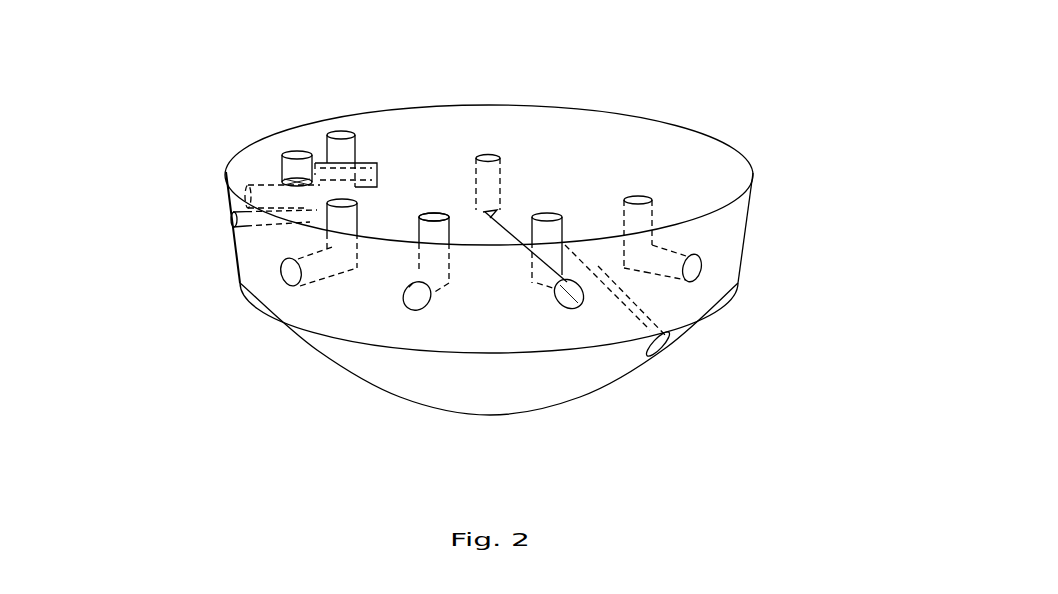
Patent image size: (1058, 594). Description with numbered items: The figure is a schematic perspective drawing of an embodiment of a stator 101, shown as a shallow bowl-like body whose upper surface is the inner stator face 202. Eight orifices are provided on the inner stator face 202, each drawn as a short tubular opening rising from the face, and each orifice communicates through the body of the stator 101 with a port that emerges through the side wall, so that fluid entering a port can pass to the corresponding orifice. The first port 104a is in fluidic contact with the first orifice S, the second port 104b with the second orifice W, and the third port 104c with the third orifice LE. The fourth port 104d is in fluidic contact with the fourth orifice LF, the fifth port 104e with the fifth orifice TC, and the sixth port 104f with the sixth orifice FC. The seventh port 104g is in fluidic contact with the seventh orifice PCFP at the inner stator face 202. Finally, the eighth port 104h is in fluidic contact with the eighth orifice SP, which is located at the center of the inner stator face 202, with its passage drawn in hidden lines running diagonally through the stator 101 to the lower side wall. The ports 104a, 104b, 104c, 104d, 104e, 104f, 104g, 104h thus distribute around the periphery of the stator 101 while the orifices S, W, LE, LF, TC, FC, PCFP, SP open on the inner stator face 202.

The stator 101 is at (724, 88).
The inner stator face 202 is at (607, 133).
The seventh port 104g is at (261, 121).
The first port 104a is at (700, 267).
The second port 104b is at (570, 300).
The third port 104c is at (417, 303).
The fourth port 104d is at (293, 275).
The fifth port 104e is at (240, 245).
The sixth port 104f is at (240, 203).
The eighth port 104h is at (673, 345).
The sixth orifice FC is at (283, 160).
The seventh orifice PCFP is at (343, 133).
The fifth orifice TC is at (300, 176).
The fourth orifice LF is at (347, 186).
The third orifice LE is at (432, 213).
The eighth orifice SP is at (486, 156).
The second orifice W is at (545, 212).
The first orifice S is at (642, 197).